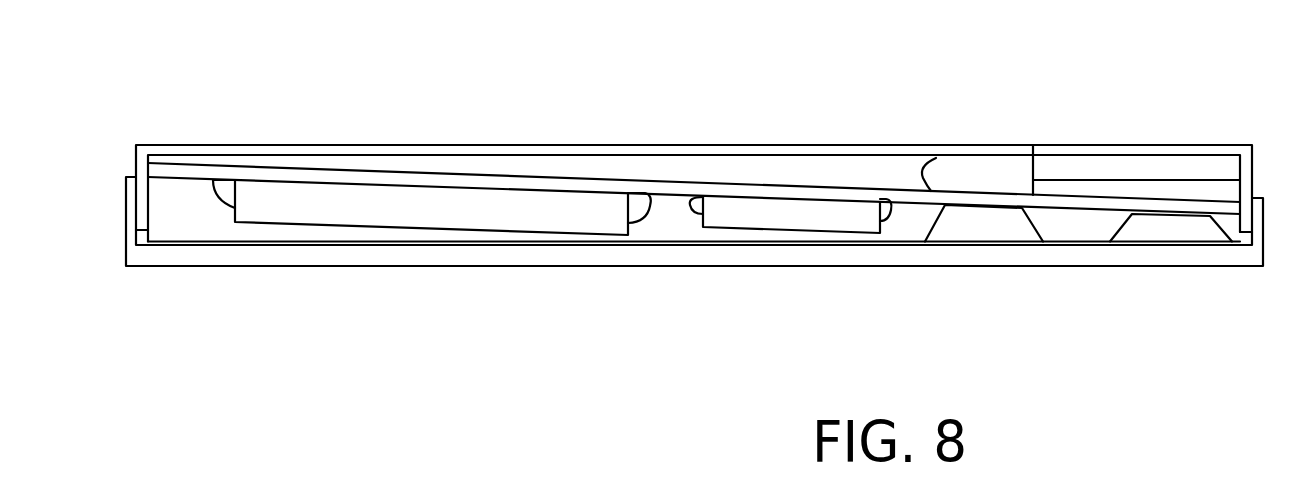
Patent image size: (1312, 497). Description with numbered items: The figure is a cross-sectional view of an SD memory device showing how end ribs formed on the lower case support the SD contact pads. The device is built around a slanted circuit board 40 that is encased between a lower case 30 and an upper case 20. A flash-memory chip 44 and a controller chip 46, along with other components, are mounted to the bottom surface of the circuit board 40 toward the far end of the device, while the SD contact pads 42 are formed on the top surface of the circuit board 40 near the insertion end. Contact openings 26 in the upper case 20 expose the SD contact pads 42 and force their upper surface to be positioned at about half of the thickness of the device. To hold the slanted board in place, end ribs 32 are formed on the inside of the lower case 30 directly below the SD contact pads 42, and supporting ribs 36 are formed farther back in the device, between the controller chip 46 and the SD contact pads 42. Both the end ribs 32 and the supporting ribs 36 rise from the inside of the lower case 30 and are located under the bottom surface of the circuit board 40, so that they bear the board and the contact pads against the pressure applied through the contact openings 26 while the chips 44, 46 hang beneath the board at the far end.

The upper case 20 is at (683, 153).
The contact openings 26 is at (1208, 167).
The lower case 30 is at (235, 257).
The end ribs 32 is at (1163, 237).
The supporting ribs 36 is at (973, 237).
The circuit board 40 is at (936, 158).
The SD contact pads 42 is at (1120, 190).
The flash-memory chip 44 is at (463, 215).
The controller chip 46 is at (803, 215).